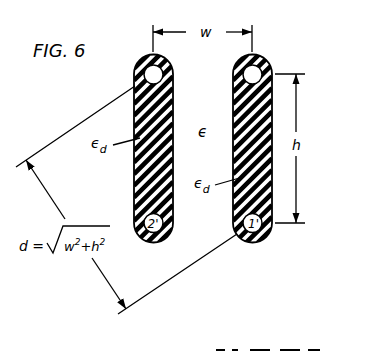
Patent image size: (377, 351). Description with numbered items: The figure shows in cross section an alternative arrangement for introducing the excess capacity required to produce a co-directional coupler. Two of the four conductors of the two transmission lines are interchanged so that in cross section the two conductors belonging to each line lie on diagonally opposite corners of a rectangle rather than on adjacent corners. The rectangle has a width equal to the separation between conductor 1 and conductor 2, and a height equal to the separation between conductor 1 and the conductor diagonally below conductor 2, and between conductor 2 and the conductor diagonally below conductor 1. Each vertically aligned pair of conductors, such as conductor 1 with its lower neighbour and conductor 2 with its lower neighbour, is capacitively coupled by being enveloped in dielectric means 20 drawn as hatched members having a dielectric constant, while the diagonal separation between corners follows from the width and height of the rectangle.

The pair of elongated electrodes (hatched members) 20 is at (242, 95).
The conductor 1 is at (153, 74).
The conductor 2 is at (252, 74).